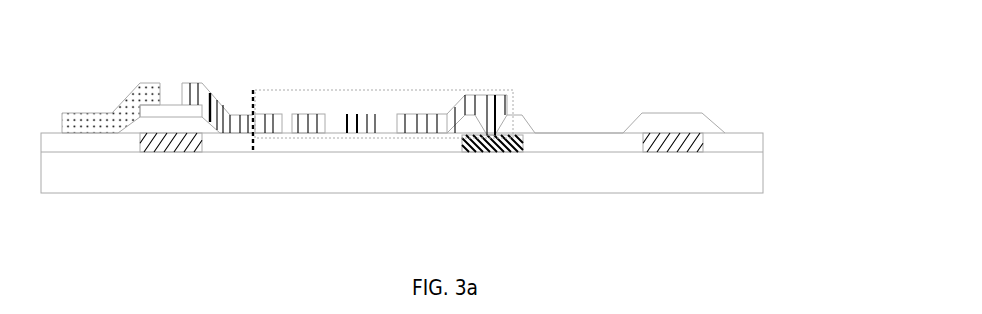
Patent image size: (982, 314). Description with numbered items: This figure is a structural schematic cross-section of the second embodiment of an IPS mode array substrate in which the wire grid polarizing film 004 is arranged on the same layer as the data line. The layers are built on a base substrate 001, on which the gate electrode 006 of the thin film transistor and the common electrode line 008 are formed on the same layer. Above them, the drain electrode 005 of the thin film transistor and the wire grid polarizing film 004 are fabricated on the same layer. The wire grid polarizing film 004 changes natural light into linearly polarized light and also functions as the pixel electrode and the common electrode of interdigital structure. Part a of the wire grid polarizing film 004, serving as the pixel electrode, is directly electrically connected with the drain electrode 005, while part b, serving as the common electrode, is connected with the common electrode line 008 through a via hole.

The base substrate 001 is at (750, 174).
The wire grid polarizing film 004 is at (382, 137).
The drain electrode 005 is at (231, 134).
The gate electrode 006 is at (177, 147).
The common electrode line 008 is at (518, 143).
The part a of the wire grid polarizing film a is at (357, 113).
The part b of the wire grid polarizing film b is at (447, 112).